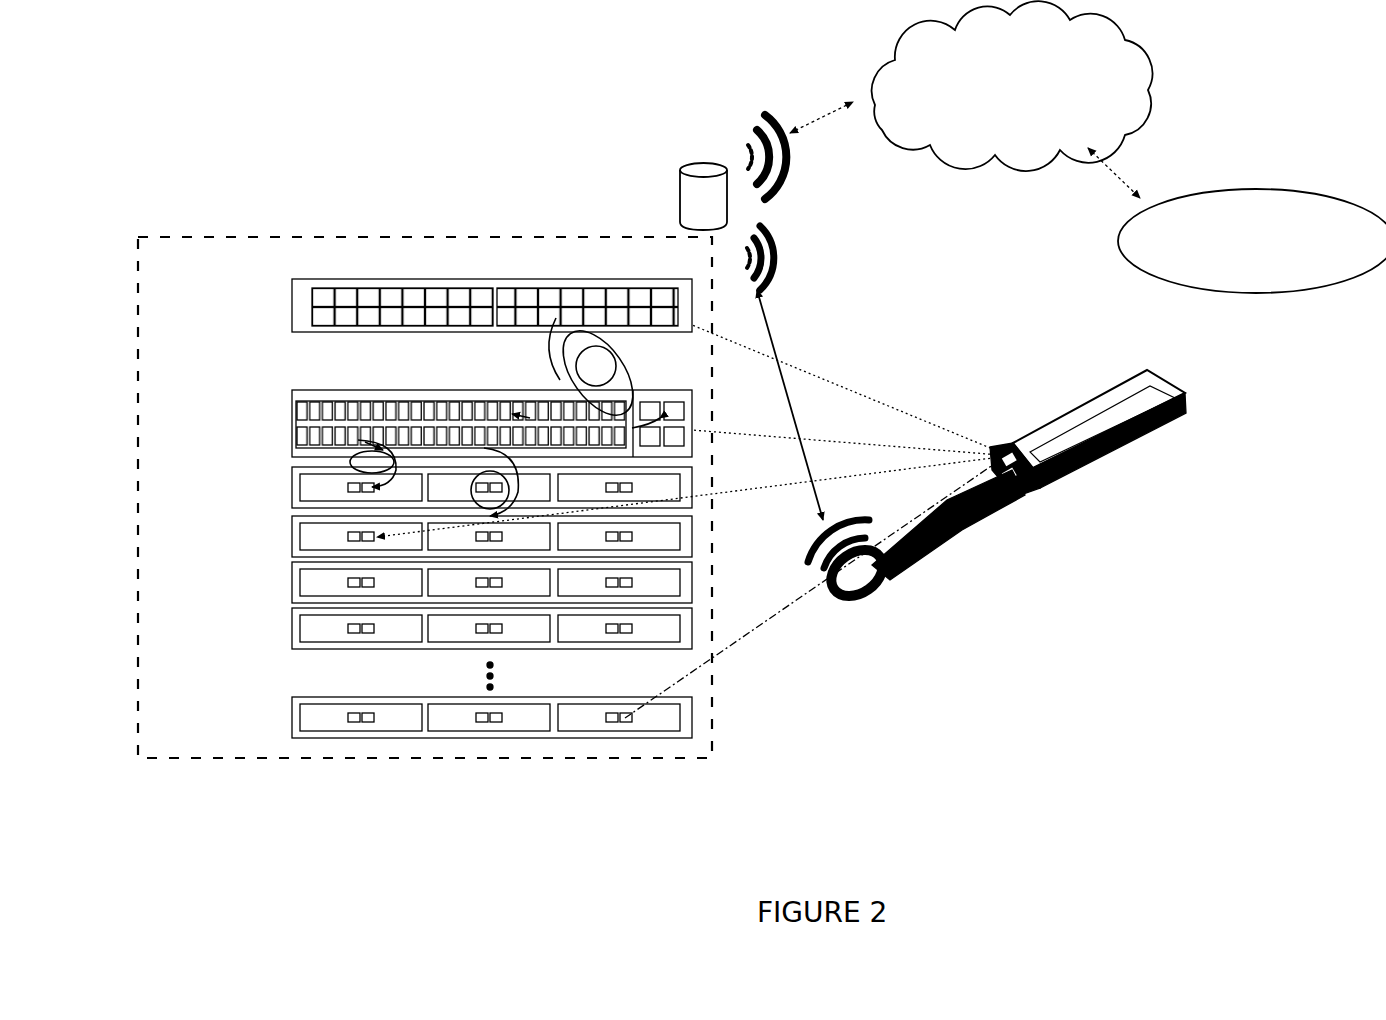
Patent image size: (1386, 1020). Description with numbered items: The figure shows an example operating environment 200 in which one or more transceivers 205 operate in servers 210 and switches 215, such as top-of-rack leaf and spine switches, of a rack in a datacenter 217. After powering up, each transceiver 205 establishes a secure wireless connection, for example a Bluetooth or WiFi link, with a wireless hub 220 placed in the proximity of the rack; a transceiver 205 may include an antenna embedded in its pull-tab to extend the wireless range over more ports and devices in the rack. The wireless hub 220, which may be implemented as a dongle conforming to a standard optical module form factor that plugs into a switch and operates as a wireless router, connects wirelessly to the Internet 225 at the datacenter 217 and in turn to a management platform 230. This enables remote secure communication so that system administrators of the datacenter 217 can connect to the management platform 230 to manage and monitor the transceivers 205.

The operating environment 200 is at (210, 62).
The transceiver 205 is at (1100, 460).
The servers 210 is at (429, 602).
The switches 215 is at (197, 281).
The datacenter 217 is at (330, 236).
The wireless hub 220 is at (668, 202).
The Internet 225 is at (1012, 86).
The management platform 230 is at (1252, 241).